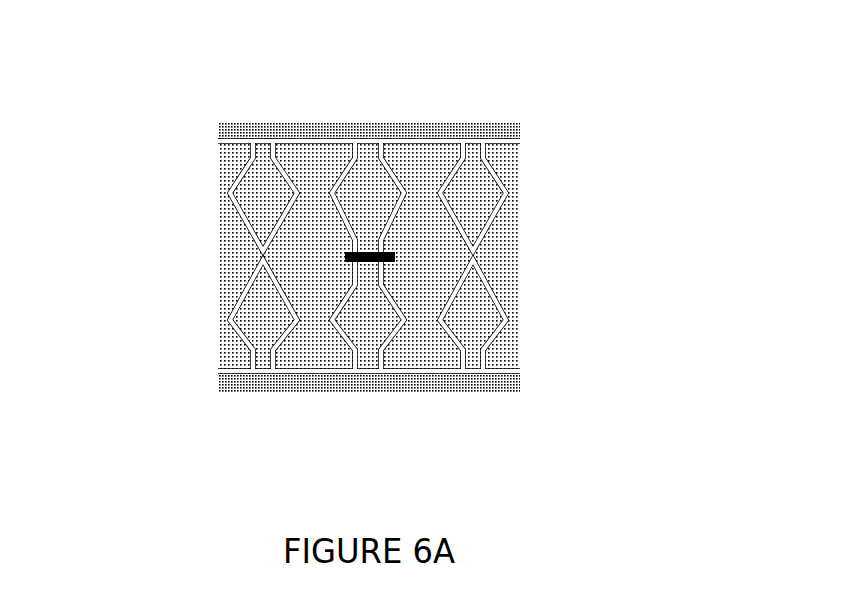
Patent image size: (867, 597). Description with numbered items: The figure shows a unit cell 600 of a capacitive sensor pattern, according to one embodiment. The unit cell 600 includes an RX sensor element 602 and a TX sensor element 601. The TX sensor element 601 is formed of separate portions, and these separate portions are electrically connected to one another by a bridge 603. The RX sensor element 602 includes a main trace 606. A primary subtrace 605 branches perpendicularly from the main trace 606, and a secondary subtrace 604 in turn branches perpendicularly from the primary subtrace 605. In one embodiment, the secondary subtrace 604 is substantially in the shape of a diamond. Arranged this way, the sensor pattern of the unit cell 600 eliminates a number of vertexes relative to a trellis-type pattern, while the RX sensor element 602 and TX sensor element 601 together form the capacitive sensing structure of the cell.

The unit cell 600 is at (372, 263).
The TX sensor element 601 is at (212, 237).
The RX sensor element 602 is at (359, 112).
The bridge 603 is at (466, 258).
The secondary subtrace 604 is at (249, 331).
The primary subtrace 605 is at (305, 390).
The main trace 606 is at (379, 344).